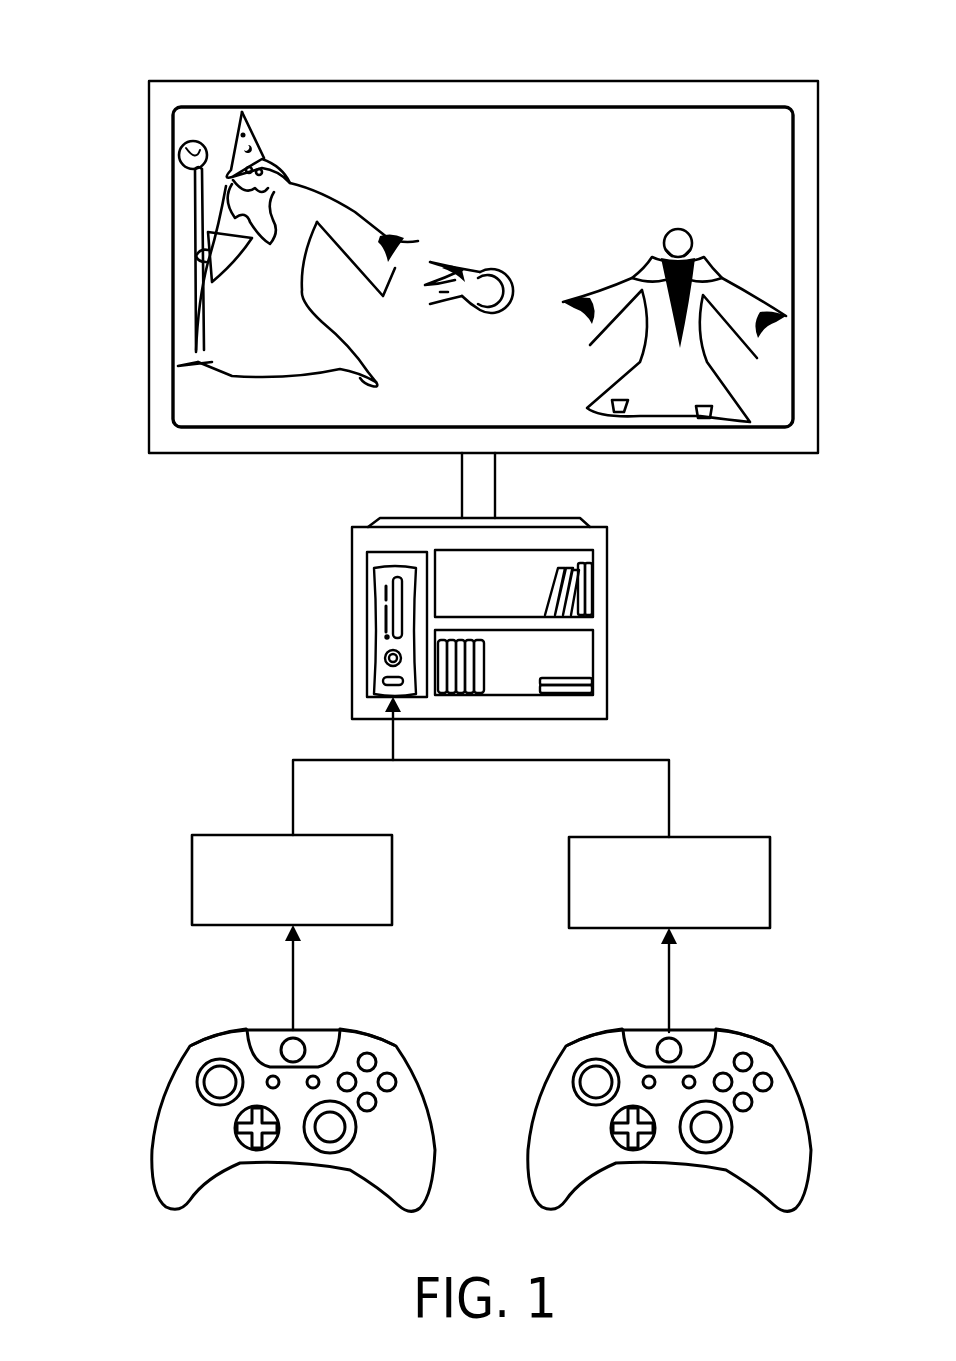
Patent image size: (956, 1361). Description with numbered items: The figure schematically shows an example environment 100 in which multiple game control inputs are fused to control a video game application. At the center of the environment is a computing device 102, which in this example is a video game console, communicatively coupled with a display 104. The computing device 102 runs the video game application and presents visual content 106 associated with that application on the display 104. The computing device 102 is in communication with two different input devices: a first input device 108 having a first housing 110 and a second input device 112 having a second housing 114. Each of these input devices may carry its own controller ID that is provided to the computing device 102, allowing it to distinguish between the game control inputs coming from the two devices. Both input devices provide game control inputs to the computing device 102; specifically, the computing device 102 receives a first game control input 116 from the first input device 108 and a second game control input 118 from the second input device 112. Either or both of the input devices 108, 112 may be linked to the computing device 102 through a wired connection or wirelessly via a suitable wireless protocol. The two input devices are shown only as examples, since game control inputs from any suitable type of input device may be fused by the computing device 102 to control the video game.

The environment 100 is at (151, 41).
The computing device 102 is at (384, 620).
The display 104 is at (714, 81).
The visual content 106 is at (300, 106).
The first input device 108 is at (158, 1034).
The first housing 110 is at (158, 1207).
The second input device 112 is at (550, 1052).
The second housing 114 is at (550, 1212).
The first game control input 116 is at (274, 921).
The second game control input 118 is at (651, 923).